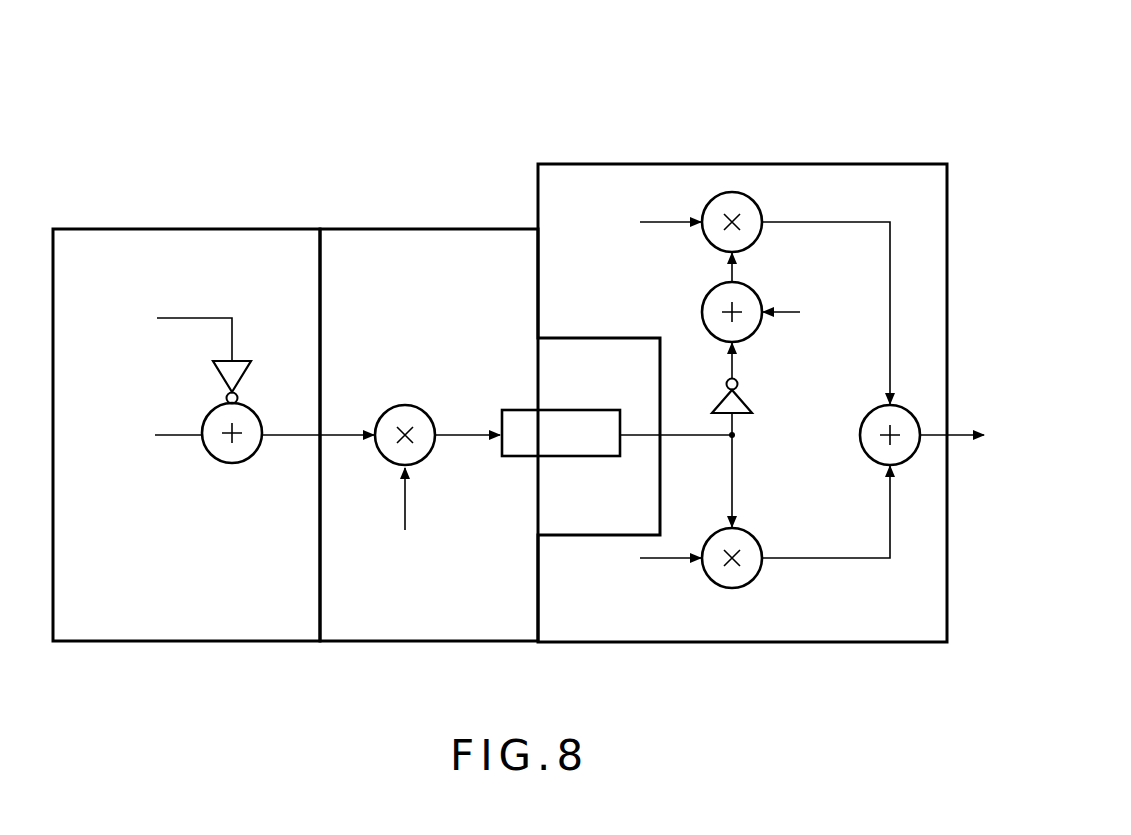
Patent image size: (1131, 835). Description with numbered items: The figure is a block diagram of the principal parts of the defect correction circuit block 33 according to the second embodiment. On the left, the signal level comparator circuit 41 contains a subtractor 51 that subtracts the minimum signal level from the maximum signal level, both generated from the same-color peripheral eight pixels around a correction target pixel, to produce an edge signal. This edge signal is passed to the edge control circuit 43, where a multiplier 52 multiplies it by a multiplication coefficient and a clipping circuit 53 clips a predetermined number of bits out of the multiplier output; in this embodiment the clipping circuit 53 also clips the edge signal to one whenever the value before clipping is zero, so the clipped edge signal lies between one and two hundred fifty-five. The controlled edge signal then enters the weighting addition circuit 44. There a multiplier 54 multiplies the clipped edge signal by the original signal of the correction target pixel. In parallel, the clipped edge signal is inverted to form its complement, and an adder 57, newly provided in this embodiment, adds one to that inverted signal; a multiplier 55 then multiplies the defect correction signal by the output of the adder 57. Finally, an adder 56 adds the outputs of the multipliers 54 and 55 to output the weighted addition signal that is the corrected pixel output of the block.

The defect correction circuit block 33 is at (663, 80).
The signal level comparator circuit 41 is at (187, 228).
The edge control circuit 43 is at (425, 230).
The weighting addition circuit 44 is at (761, 164).
The subtractor 51 is at (226, 463).
The multiplier 52 is at (405, 405).
The clipping circuit 53 is at (556, 410).
The multiplier 54 is at (748, 530).
The multiplier 55 is at (754, 200).
The adder 56 is at (868, 463).
The adder 57 is at (702, 305).